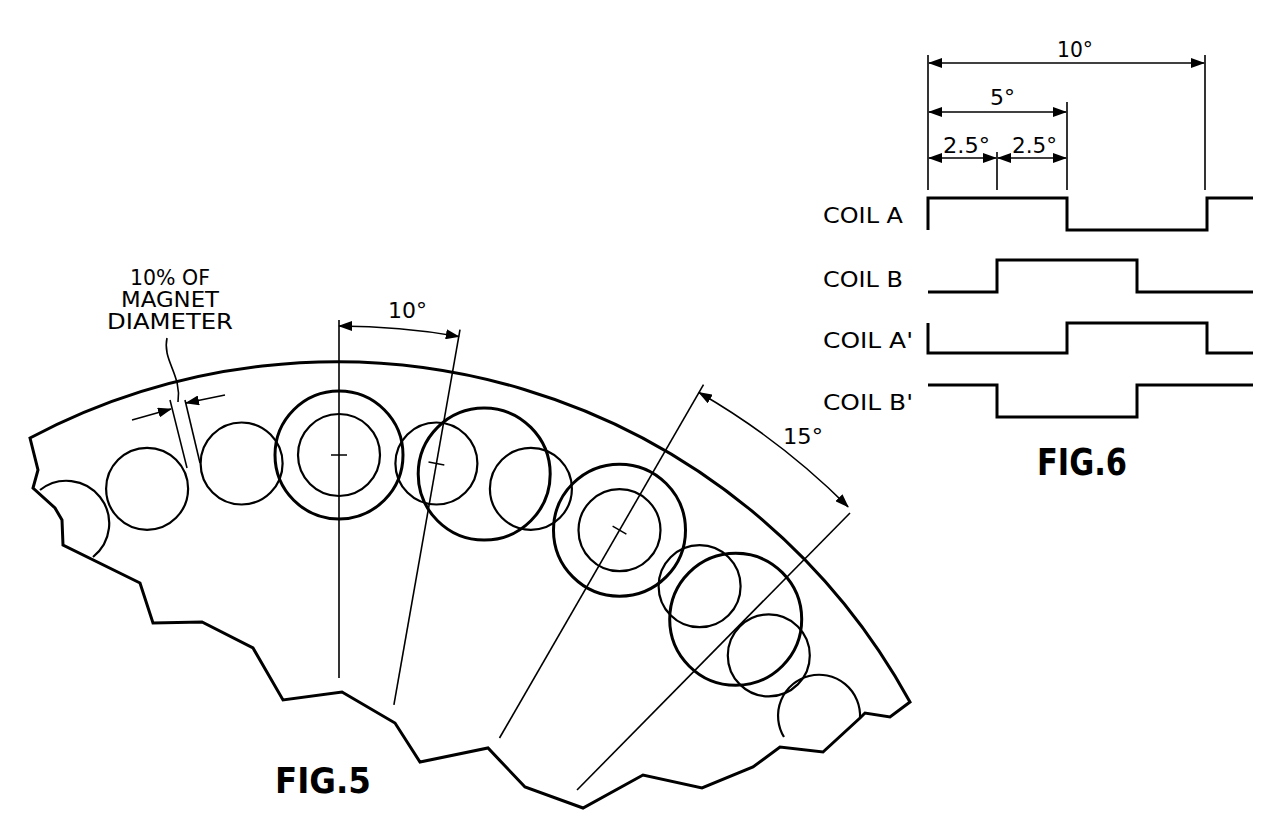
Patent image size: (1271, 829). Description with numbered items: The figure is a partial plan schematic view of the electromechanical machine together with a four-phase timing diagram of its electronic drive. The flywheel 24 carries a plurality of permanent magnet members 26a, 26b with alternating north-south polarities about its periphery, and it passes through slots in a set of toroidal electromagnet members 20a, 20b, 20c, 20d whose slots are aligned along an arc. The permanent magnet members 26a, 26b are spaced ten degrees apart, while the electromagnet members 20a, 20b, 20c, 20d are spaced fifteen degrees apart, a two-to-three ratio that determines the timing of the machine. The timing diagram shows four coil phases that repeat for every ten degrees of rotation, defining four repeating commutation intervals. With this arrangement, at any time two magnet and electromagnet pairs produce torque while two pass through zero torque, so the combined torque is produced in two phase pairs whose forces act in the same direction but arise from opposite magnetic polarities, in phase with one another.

The toroidal electromagnet member 20a is at (302, 397).
The toroidal electromagnet member 20b is at (518, 413).
The toroidal electromagnet member 20c is at (618, 465).
The toroidal electromagnet member 20d is at (802, 605).
The flywheel 24 is at (493, 622).
The permanent magnet member 26a is at (172, 528).
The permanent magnet member 26b is at (253, 505).